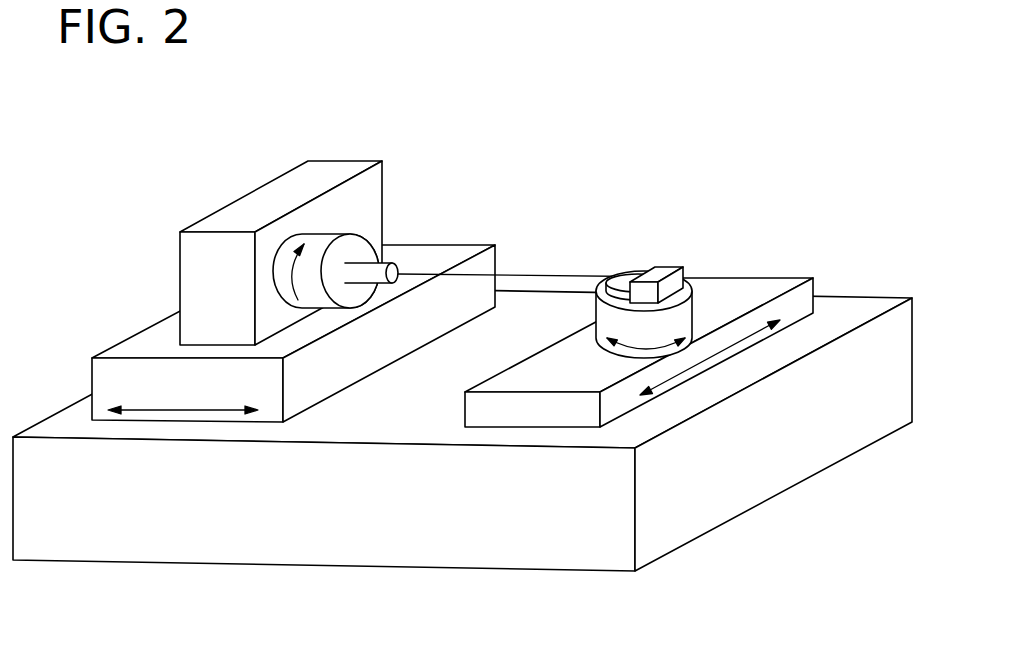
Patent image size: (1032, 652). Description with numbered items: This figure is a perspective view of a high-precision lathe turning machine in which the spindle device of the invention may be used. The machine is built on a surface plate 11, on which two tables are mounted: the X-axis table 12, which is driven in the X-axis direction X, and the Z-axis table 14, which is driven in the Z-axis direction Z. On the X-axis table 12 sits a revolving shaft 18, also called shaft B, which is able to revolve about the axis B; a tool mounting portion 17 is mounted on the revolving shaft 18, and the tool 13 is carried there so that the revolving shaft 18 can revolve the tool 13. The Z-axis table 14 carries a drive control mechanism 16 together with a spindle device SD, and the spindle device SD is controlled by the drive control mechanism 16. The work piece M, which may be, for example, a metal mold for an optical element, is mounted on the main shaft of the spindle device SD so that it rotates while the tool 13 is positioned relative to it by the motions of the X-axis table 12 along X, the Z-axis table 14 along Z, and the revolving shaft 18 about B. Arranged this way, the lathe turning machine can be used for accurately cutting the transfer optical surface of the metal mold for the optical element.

The surface plate 11 is at (772, 477).
The X-axis table 12 is at (773, 285).
The tool 13 is at (623, 283).
The Z-axis table 14 is at (100, 377).
The drive control mechanism 16 is at (345, 172).
The tool mounting portion 17 is at (660, 273).
The revolving shaft 18 is at (695, 310).
The spindle device SD is at (333, 230).
The work piece M is at (382, 258).
The Z-axis direction Z is at (183, 397).
The X-axis direction X is at (710, 357).
The shaft B is at (646, 335).